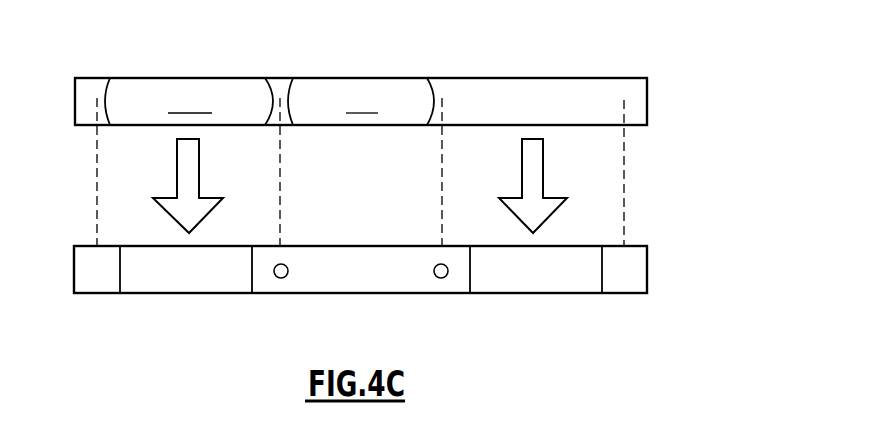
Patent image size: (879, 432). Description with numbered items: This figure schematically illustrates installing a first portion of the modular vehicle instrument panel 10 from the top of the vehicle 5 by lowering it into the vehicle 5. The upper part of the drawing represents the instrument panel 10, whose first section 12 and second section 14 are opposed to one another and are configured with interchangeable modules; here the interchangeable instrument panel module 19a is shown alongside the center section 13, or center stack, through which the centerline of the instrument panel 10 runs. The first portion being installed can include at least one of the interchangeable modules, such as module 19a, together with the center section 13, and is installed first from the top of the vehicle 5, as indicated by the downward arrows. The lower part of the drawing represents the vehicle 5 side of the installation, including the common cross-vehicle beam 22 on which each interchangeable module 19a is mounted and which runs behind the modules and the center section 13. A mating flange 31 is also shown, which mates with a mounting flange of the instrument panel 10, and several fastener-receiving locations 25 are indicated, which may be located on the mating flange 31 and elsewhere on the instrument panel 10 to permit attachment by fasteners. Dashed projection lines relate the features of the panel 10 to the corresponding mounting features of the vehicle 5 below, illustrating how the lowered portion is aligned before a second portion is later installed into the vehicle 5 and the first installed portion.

The vehicle 5 is at (408, 285).
The modular vehicle instrument panel 10 is at (413, 128).
The first section 12 is at (595, 52).
The center section 13 is at (361, 101).
The second section 14 is at (171, 67).
The interchangeable instrument panel module 19a is at (190, 100).
The cross-vehicle beam 22 is at (507, 277).
The fastener-receiving locations 25 is at (97, 277).
The mating flange 31 is at (359, 277).